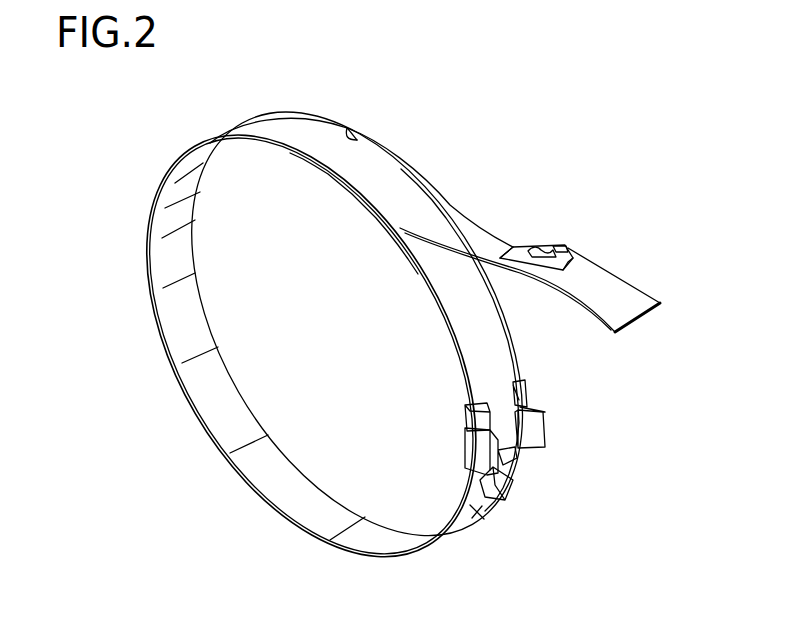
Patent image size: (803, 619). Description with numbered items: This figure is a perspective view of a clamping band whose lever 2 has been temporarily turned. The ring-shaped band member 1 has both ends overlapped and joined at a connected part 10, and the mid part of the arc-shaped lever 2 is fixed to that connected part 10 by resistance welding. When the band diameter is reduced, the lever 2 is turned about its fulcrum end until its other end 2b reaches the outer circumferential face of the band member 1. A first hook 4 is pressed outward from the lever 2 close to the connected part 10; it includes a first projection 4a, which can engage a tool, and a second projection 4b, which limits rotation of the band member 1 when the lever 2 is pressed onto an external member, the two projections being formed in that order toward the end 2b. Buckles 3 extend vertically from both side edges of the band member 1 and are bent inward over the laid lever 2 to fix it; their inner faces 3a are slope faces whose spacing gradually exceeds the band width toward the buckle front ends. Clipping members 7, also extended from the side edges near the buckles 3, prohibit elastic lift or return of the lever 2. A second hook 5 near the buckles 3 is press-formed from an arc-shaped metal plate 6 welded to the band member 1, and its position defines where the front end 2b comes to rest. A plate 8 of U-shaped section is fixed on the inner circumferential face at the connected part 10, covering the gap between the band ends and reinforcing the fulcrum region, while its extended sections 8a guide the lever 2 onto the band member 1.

The band member 1 is at (268, 482).
The lever 2 is at (613, 287).
The other end of the lever 2b is at (640, 321).
The buckle 3 is at (465, 447).
The inner face of the buckle 3a is at (540, 428).
The first hook 4 is at (559, 228).
The first projection 4a is at (533, 229).
The second projection 4b is at (567, 247).
The second hook 5 is at (503, 487).
The arc-shaped metal plate 6 is at (477, 512).
The clipping member 7 is at (463, 407).
The plate 8 is at (443, 322).
The extended section of the plate 8a is at (347, 180).
The connected part 10 is at (480, 233).